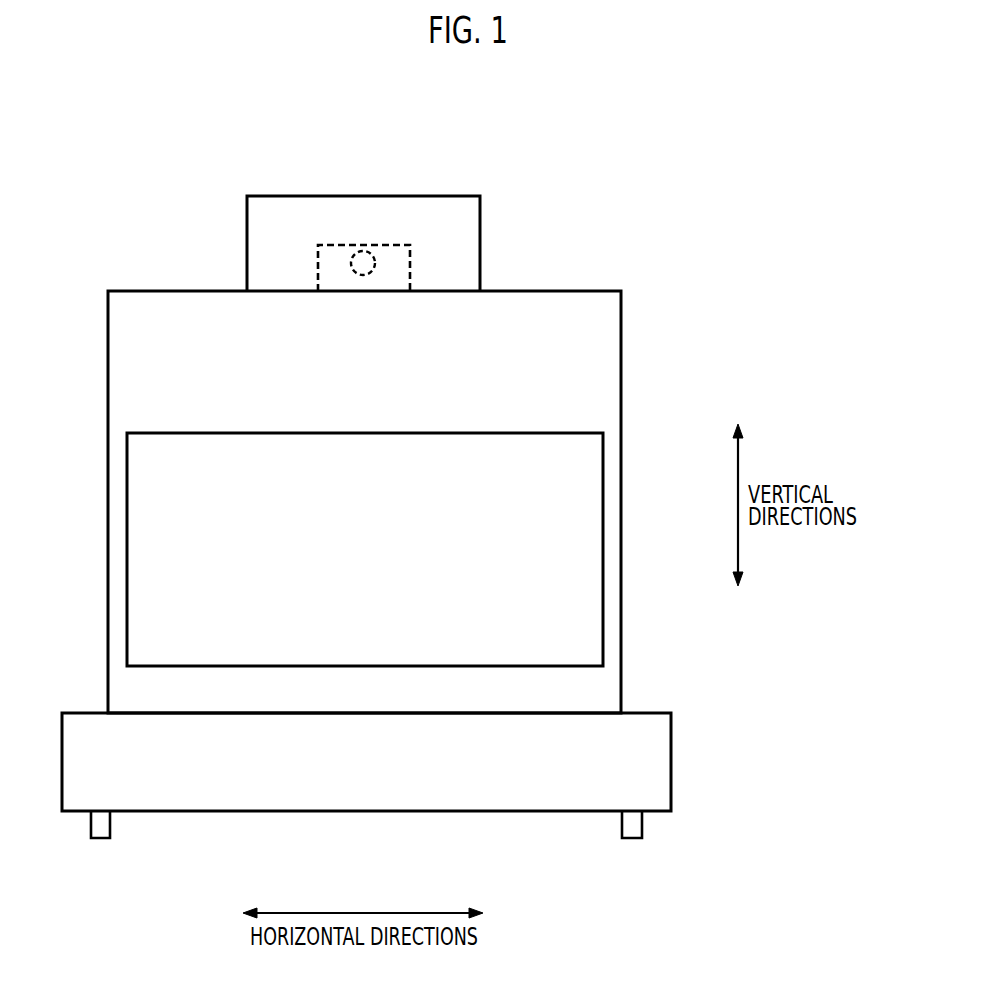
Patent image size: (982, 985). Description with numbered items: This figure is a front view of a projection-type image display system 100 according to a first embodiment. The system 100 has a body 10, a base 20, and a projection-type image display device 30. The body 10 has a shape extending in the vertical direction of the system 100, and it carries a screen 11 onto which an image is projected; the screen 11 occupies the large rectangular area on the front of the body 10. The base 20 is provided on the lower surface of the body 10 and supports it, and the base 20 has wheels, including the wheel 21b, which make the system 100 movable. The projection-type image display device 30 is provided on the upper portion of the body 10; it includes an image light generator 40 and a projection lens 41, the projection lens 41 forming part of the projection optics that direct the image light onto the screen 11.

The projection-type image display system 100 is at (622, 168).
The body 10 is at (607, 376).
The screen 11 is at (588, 538).
The base 20 is at (654, 763).
The wheel 21b is at (103, 824).
The projection-type image display device 30 is at (388, 205).
The image light generator 40 is at (418, 266).
The projection lens 41 is at (365, 276).